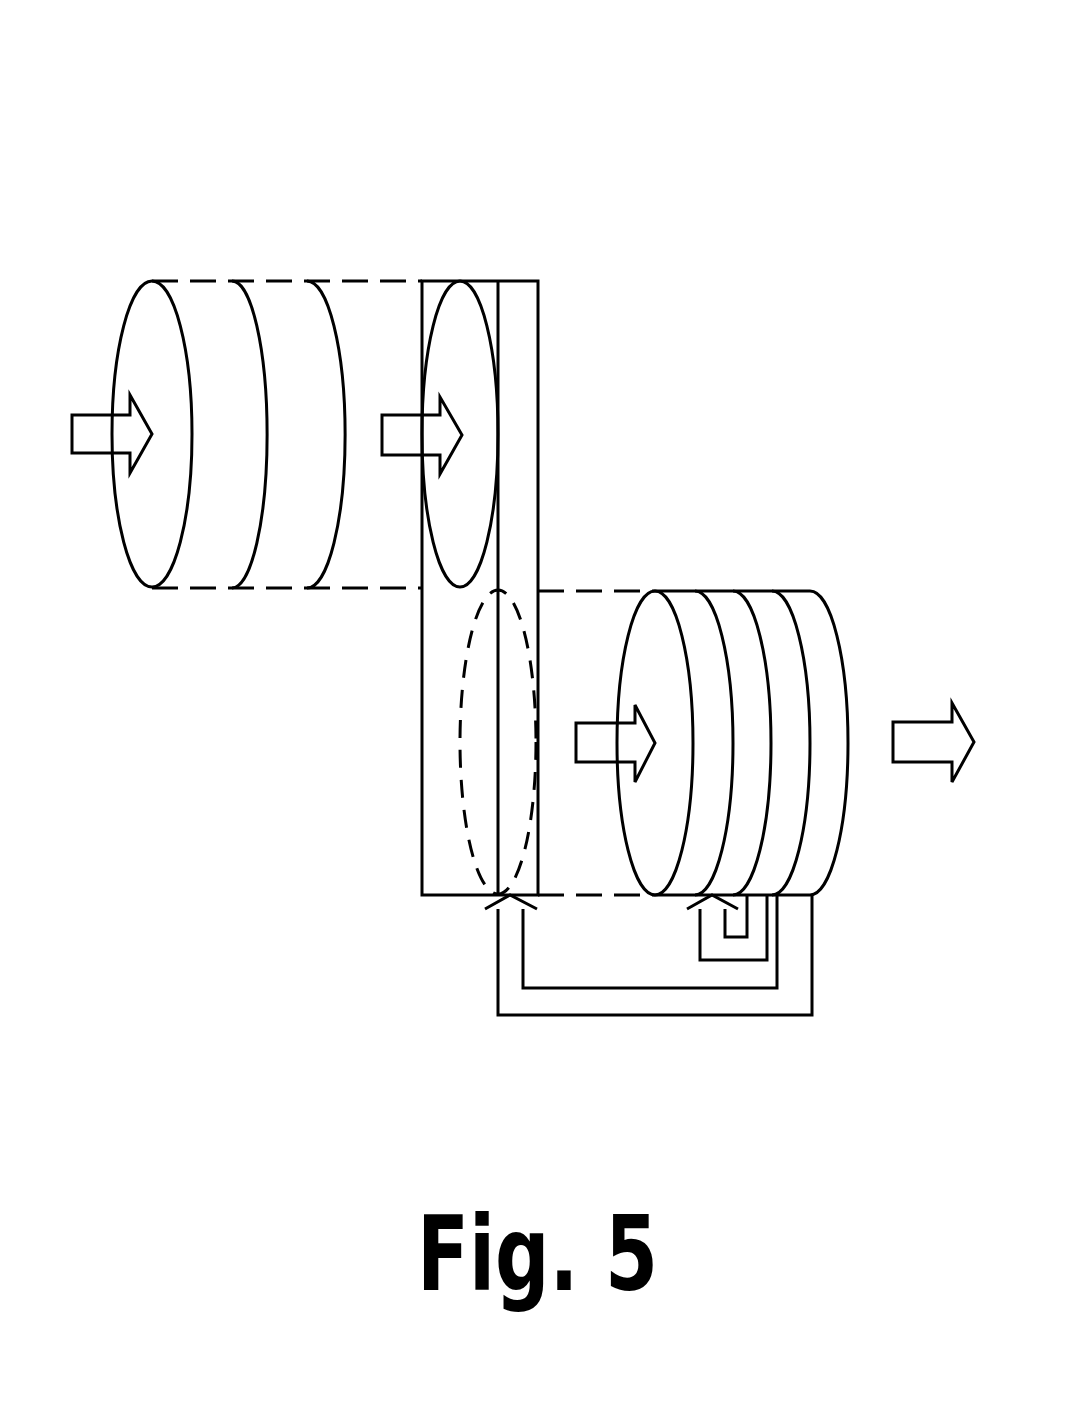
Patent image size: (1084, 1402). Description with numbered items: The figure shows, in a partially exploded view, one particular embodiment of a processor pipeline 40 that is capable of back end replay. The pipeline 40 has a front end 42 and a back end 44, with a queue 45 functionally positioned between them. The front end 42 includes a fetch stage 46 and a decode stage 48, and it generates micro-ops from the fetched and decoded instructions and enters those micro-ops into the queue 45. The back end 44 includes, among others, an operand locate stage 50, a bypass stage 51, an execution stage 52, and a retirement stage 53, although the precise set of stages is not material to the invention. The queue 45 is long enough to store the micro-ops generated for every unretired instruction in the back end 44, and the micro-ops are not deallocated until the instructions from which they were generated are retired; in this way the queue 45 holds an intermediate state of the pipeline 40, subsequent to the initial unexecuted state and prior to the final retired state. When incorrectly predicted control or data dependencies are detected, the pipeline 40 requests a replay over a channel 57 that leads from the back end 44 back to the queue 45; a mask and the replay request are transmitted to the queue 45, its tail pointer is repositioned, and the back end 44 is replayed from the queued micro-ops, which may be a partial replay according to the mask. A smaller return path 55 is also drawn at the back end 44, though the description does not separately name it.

The pipeline 40 is at (495, 82).
The front end 42 is at (345, 203).
The back end 44 is at (873, 498).
The queue 45 is at (460, 281).
The fetch stage 46 is at (170, 281).
The decode stage 48 is at (255, 281).
The operand locate stage 50 is at (679, 591).
The bypass stage 51 is at (713, 591).
The execution stage 52 is at (748, 591).
The retirement stage 53 is at (787, 591).
The bleed recirculation duct 55 is at (700, 956).
The channel 57 is at (700, 1015).